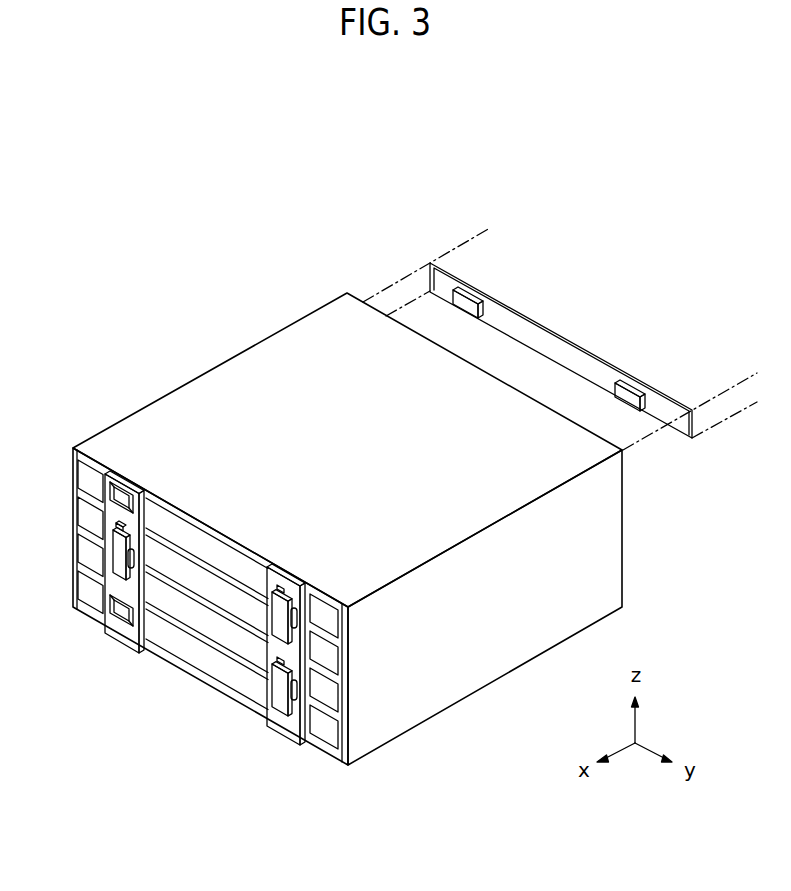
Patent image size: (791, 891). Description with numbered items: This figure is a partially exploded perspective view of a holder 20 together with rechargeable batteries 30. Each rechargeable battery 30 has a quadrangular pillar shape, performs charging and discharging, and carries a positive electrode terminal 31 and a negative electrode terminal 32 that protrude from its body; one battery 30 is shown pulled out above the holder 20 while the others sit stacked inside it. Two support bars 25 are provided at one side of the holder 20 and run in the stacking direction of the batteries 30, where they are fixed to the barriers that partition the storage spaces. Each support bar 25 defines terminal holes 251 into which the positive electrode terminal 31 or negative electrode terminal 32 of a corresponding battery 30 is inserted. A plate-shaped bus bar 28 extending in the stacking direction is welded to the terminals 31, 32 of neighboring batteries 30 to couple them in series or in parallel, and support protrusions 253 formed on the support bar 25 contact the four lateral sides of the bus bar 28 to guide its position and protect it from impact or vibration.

The holder 20 is at (385, 491).
The support bar 25 is at (159, 620).
The terminal hole 251 is at (121, 498).
The support protrusion 253 is at (74, 560).
The bus bar 28 is at (128, 560).
The rechargeable battery 30 is at (442, 454).
The positive electrode terminal 31 is at (448, 285).
The negative electrode terminal 32 is at (633, 402).